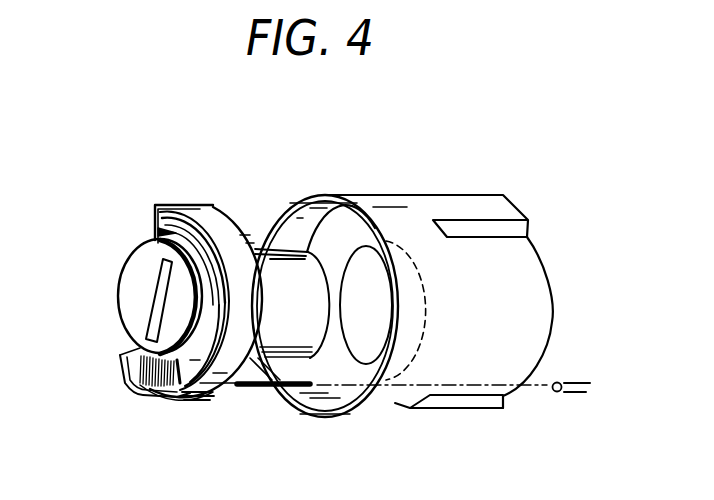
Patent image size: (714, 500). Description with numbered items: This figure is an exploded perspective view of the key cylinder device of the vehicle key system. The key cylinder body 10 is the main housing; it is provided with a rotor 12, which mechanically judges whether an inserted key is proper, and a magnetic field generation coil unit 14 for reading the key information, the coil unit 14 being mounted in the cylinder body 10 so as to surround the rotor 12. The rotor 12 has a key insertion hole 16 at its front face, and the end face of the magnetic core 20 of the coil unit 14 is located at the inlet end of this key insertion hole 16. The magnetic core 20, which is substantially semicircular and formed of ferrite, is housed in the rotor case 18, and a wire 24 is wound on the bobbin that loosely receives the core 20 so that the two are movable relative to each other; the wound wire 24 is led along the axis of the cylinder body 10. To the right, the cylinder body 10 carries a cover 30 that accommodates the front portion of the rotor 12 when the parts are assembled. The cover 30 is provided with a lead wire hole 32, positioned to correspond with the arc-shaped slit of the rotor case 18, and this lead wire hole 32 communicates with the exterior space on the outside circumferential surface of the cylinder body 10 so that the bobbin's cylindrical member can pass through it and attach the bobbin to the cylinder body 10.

The key cylinder body 10 is at (450, 194).
The rotor 12 is at (134, 274).
The magnetic field generation coil unit 14 is at (157, 230).
The key insertion hole 16 is at (133, 317).
The rotor case 18 is at (214, 212).
The magnetic core 20 is at (197, 400).
The wire 24 is at (143, 396).
The cover 30 is at (346, 420).
The lead wire hole 32 is at (386, 380).